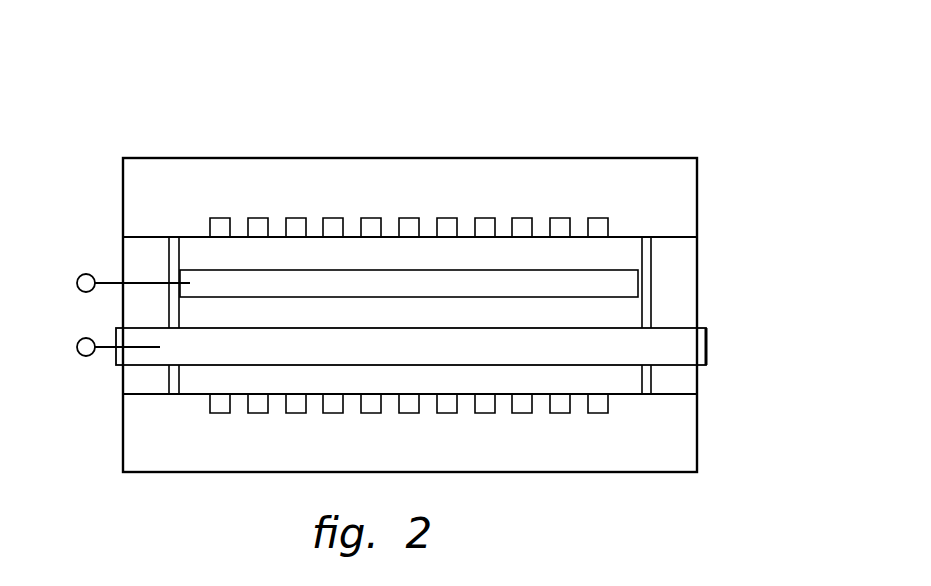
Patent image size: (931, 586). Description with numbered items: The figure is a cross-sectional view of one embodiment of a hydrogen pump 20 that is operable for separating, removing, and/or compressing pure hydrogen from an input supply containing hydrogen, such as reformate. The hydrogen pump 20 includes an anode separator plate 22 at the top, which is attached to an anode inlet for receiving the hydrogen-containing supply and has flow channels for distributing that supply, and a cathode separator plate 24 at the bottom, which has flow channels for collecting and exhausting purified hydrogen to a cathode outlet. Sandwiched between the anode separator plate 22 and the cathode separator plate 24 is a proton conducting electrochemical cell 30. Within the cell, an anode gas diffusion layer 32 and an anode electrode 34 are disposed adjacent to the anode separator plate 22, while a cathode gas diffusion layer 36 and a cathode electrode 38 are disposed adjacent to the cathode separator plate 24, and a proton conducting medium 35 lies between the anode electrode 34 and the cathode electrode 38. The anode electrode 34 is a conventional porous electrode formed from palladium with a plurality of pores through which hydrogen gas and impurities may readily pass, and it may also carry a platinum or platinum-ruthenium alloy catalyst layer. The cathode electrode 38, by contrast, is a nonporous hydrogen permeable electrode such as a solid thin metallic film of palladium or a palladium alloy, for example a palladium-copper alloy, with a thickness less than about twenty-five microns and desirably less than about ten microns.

The hydrogen pump 20 is at (192, 97).
The anode separator plate 22 is at (675, 178).
The cathode separator plate 24 is at (680, 457).
The proton conducting electrochemical cell 30 is at (758, 235).
The anode gas diffusion layer 32 is at (628, 255).
The anode electrode 34 is at (633, 287).
The proton conducting medium 35 is at (630, 312).
The cathode gas diffusion layer 36 is at (620, 378).
The cathode electrode 38 is at (697, 342).